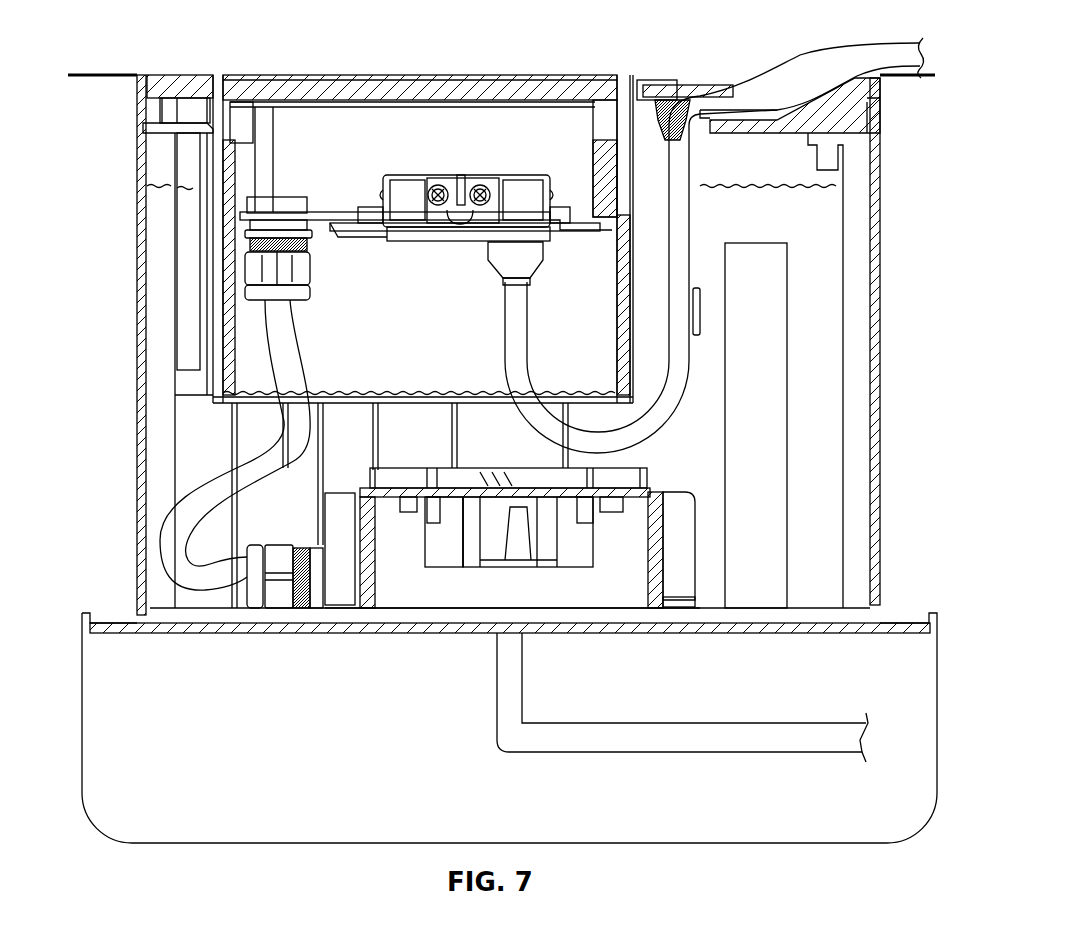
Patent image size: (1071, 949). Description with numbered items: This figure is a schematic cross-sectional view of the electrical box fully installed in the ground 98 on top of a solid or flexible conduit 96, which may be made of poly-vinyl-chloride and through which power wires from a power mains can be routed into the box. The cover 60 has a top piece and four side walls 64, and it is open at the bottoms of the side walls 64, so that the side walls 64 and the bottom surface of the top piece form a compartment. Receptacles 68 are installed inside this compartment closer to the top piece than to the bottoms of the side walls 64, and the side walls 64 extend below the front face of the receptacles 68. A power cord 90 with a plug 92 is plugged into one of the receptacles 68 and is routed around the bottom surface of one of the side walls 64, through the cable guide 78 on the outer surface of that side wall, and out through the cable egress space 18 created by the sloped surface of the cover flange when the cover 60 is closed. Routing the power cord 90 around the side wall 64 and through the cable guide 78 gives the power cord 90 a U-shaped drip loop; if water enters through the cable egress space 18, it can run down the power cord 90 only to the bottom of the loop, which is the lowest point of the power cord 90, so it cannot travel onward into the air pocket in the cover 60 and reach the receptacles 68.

The ground 98 is at (105, 72).
The cover 60 is at (508, 77).
The side walls 64 is at (638, 137).
The cable egress space 18 is at (758, 76).
The power cord 90 is at (868, 60).
The receptacles 68 is at (497, 213).
The plug 92 is at (512, 250).
The cable guide 78 is at (700, 315).
The conduit 96 is at (520, 753).